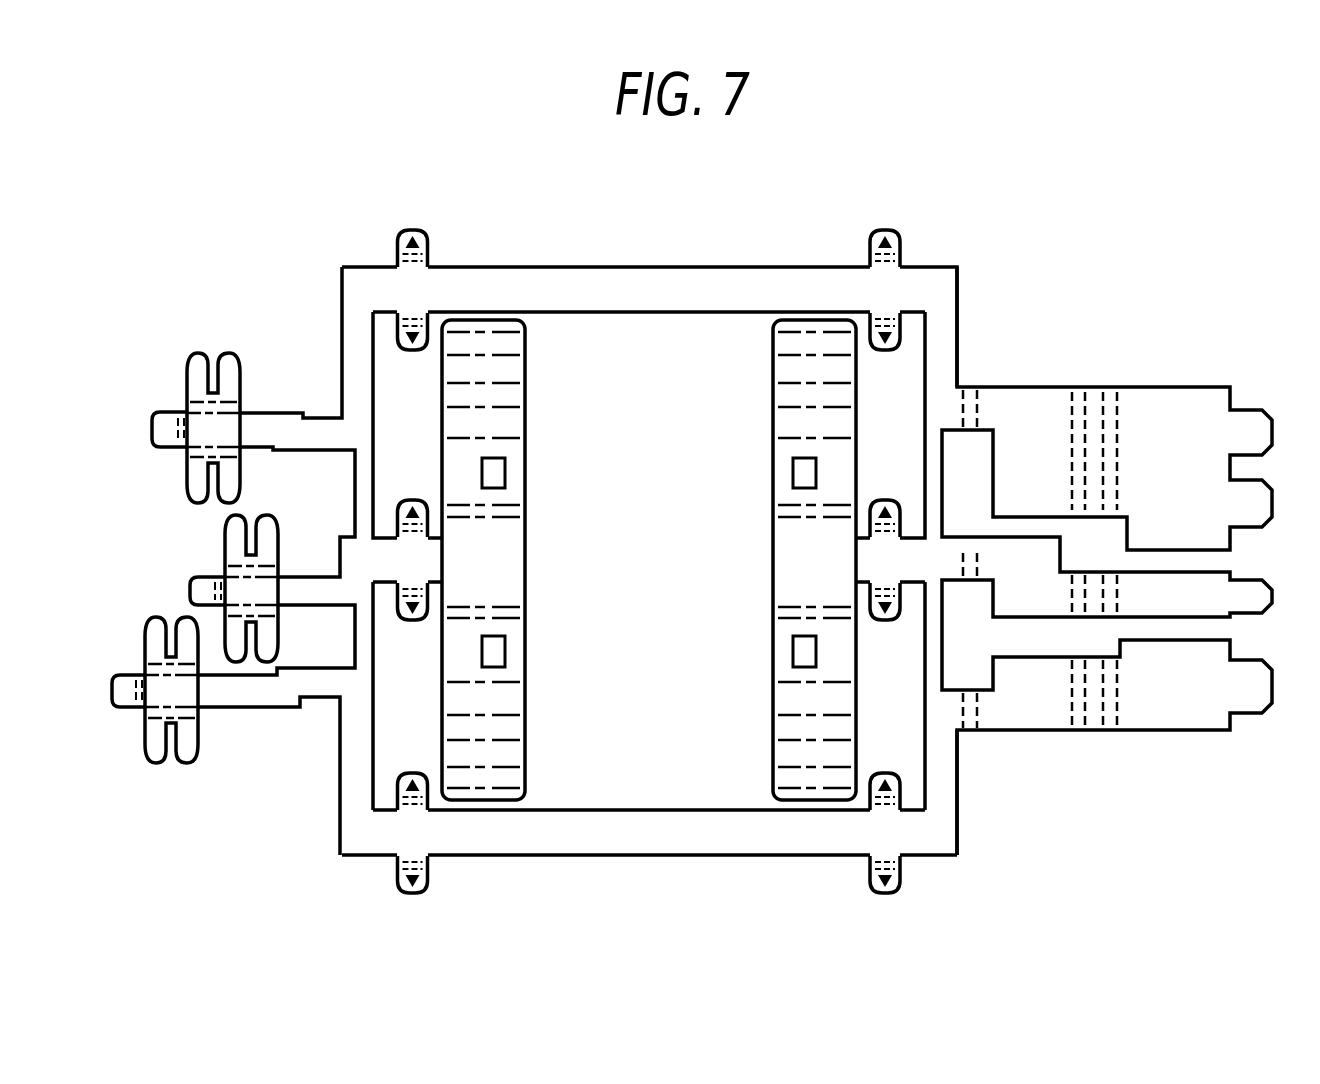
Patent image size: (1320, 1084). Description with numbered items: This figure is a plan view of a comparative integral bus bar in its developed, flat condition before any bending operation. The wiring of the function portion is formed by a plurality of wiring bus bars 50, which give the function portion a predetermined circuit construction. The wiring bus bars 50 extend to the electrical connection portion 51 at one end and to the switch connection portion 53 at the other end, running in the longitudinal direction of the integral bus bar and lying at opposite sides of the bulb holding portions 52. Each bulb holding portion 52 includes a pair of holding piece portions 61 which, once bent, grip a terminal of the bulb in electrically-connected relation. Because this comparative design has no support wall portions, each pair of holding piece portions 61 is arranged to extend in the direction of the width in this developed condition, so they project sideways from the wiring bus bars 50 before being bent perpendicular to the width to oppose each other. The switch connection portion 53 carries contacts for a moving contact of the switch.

The wiring bus bar 50 is at (642, 293).
The electrical connection portion 51 is at (205, 344).
The bulb holding portion 52 is at (476, 320).
The switch connection portion 53 is at (1130, 358).
The holding piece portion 61 is at (500, 365).